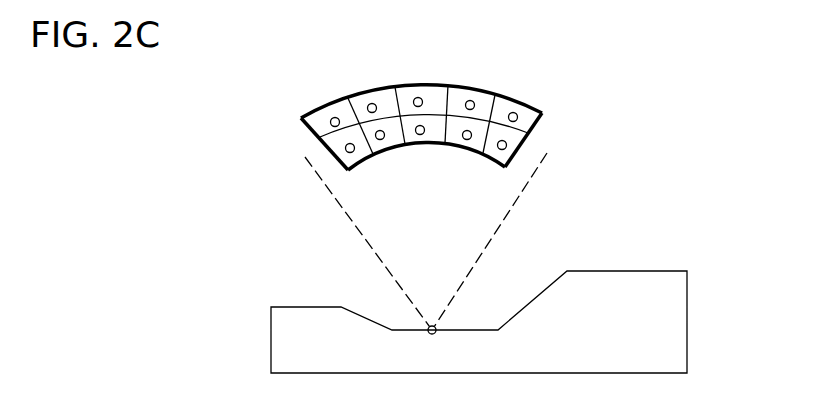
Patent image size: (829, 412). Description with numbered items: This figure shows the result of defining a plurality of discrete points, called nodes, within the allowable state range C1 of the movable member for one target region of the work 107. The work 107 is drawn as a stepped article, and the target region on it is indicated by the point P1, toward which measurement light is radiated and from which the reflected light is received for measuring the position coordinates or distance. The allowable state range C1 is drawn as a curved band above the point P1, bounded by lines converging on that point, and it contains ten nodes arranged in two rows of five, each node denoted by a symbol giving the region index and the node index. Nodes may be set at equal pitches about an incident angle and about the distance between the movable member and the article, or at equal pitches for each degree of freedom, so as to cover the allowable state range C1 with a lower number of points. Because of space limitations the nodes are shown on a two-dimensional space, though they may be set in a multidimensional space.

The allowable state range C1 is at (374, 84).
The point P1 is at (426, 256).
The work 107 is at (688, 316).